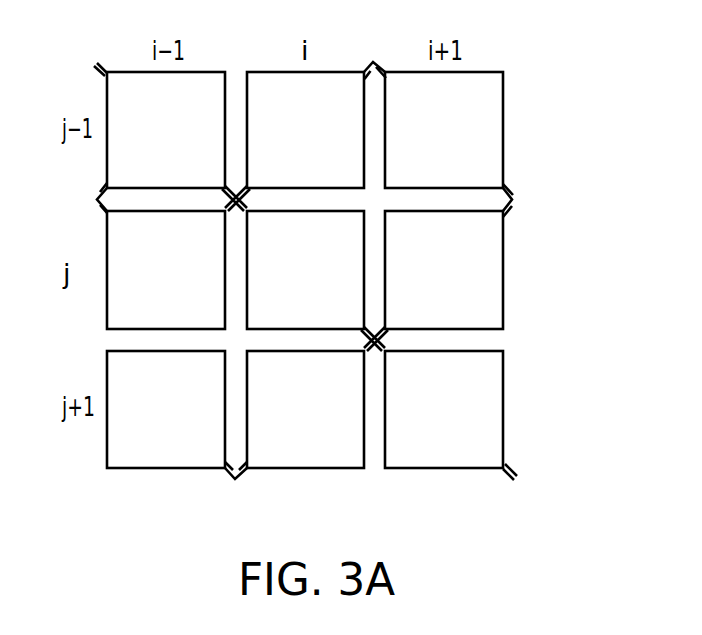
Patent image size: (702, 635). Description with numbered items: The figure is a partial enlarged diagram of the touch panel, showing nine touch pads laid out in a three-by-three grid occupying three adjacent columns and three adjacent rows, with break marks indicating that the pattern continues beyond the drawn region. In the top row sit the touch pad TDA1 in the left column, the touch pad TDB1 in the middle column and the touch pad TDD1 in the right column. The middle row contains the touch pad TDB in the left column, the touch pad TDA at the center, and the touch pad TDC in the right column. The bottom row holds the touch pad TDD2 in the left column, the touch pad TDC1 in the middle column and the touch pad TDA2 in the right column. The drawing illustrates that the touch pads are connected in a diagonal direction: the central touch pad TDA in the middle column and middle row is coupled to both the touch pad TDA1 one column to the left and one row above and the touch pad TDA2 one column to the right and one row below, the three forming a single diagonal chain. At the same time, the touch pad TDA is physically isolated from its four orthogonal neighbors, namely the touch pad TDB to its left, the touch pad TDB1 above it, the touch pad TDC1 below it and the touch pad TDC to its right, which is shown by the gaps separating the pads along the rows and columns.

The touch pad TDA1 is at (208, 90).
The touch pad TDB1 is at (340, 90).
The touch pad TDD1 is at (478, 129).
The touch pad TDB is at (120, 308).
The touch pad TDA is at (337, 250).
The touch pad TDC is at (478, 273).
The touch pad TDD2 is at (163, 442).
The touch pad TDC1 is at (306, 442).
The touch pad TDA2 is at (478, 418).